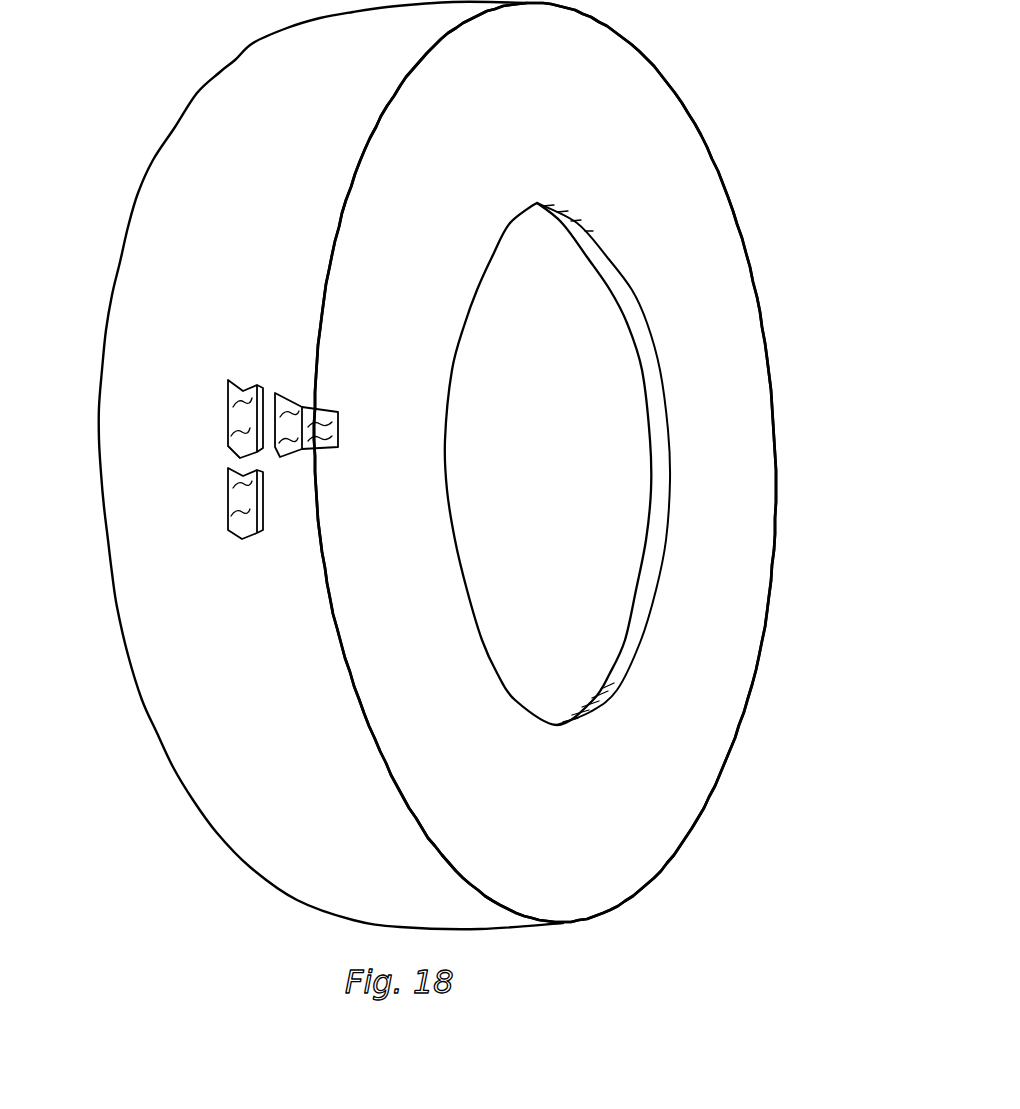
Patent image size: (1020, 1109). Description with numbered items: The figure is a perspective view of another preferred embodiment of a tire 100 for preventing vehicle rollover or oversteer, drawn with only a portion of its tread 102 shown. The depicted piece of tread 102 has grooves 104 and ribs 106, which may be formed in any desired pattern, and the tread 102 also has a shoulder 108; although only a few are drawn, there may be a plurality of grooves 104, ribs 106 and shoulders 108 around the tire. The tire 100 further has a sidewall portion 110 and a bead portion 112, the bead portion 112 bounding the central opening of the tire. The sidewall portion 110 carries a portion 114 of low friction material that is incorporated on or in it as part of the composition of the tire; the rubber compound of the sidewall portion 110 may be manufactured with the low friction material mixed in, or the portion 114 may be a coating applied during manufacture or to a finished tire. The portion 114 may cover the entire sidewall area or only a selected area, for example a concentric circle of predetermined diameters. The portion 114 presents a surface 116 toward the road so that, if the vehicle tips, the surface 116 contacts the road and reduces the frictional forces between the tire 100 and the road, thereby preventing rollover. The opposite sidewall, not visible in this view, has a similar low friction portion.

The tire 100 is at (116, 156).
The tread 102 is at (268, 355).
The grooves 104 is at (227, 455).
The ribs 106 is at (238, 413).
The shoulder 108 is at (290, 400).
The sidewall portion 110 is at (707, 284).
The bead portion 112 is at (517, 690).
The portion of low friction material 114 is at (662, 153).
The surface 116 is at (619, 112).